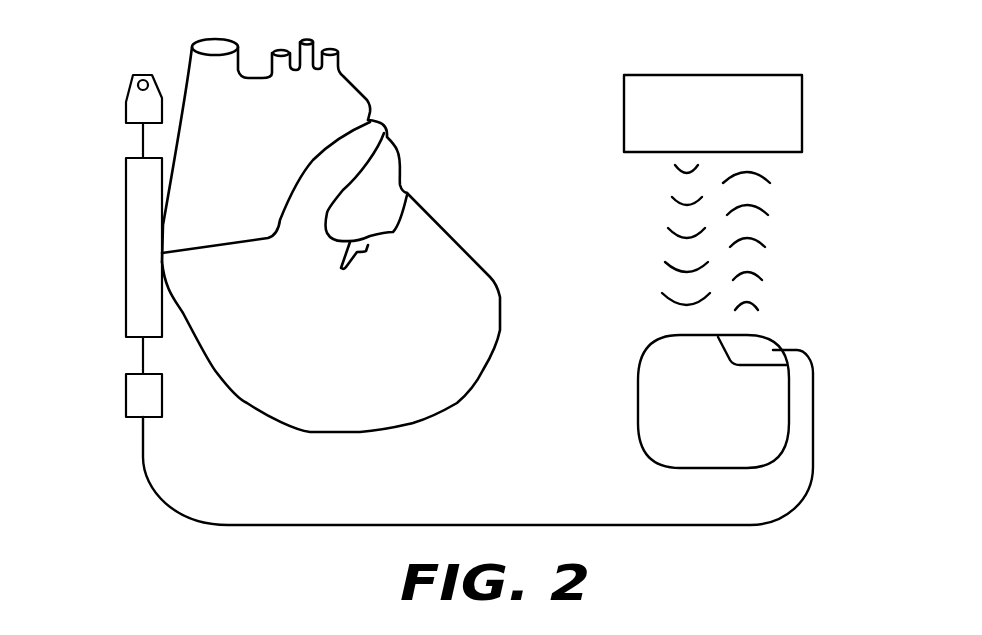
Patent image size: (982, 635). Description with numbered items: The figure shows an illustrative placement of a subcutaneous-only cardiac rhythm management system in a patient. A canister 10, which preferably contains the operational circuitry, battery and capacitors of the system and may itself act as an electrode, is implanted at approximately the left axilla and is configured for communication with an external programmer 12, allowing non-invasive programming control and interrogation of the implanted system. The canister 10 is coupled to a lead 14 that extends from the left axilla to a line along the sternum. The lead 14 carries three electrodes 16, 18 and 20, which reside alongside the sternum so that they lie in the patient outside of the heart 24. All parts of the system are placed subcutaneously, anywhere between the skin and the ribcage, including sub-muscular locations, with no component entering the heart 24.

The canister 10 is at (648, 398).
The programmer 12 is at (712, 88).
The lead 14 is at (527, 524).
The electrode 16 is at (153, 417).
The electrode 18 is at (153, 215).
The electrode 20 is at (132, 100).
The heart 24 is at (423, 108).